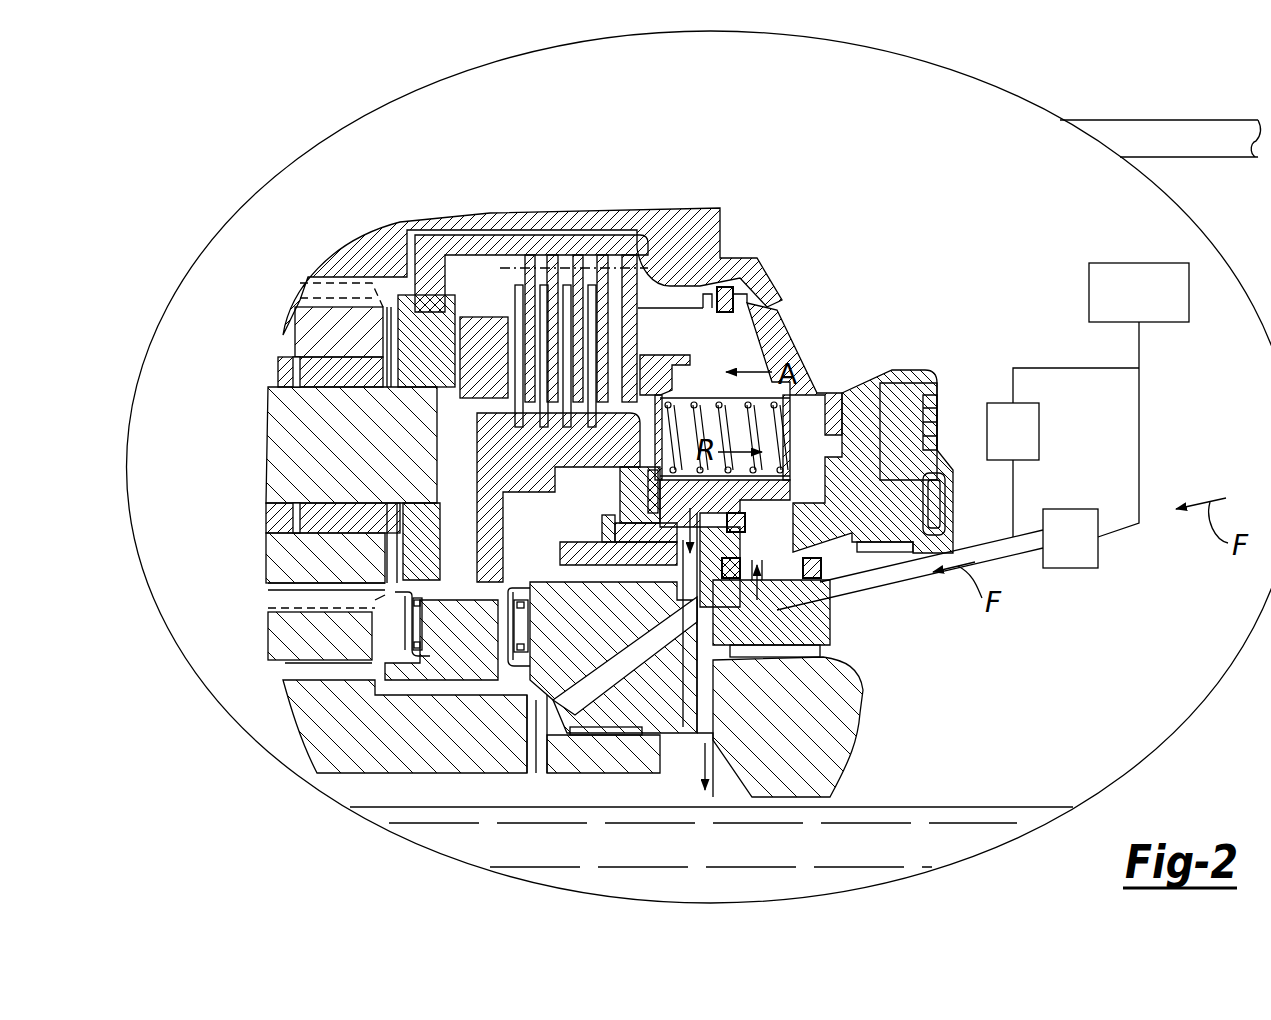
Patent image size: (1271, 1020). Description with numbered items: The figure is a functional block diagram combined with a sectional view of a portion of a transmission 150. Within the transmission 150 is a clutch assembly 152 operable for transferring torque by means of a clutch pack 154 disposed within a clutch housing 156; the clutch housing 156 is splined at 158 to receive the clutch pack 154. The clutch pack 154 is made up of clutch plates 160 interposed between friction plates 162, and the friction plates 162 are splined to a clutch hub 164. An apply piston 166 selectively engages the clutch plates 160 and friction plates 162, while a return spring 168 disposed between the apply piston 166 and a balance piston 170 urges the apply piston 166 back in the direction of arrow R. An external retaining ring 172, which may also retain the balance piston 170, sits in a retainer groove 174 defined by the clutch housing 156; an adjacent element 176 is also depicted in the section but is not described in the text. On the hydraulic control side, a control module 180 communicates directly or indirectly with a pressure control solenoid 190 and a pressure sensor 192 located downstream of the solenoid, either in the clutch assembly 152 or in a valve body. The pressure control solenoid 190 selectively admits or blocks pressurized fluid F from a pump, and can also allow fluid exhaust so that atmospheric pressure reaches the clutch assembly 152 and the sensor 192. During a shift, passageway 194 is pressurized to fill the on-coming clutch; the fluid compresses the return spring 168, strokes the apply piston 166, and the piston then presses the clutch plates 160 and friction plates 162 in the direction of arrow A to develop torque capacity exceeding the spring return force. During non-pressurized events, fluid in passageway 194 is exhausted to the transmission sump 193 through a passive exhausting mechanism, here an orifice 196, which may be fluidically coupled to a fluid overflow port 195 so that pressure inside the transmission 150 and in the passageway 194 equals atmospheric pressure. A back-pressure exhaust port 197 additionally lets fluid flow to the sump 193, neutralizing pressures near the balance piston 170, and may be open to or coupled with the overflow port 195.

The transmission 150 is at (932, 65).
The clutch assembly 152 is at (232, 446).
The clutch pack 154 is at (498, 388).
The clutch housing 156 is at (753, 273).
The splines 158 is at (525, 240).
The clutch plates 160 is at (530, 258).
The friction plates 162 is at (519, 427).
The clutch hub 164 is at (598, 470).
The apply piston 166 is at (815, 405).
The return spring 168 is at (715, 375).
The balance piston 170 is at (660, 512).
The external retaining ring 172 is at (600, 540).
The retainer groove 174 is at (600, 540).
The seal 176 is at (568, 552).
The control module 180 is at (1089, 290).
The pressure control solenoid 190 is at (1078, 568).
The pressure sensor 192 is at (997, 403).
The transmission sump 193 is at (880, 807).
The passageway 194 is at (840, 605).
The fluid overflow port 195 is at (1148, 120).
The orifice 196 is at (782, 305).
The back-pressure exhaust port 197 is at (710, 640).